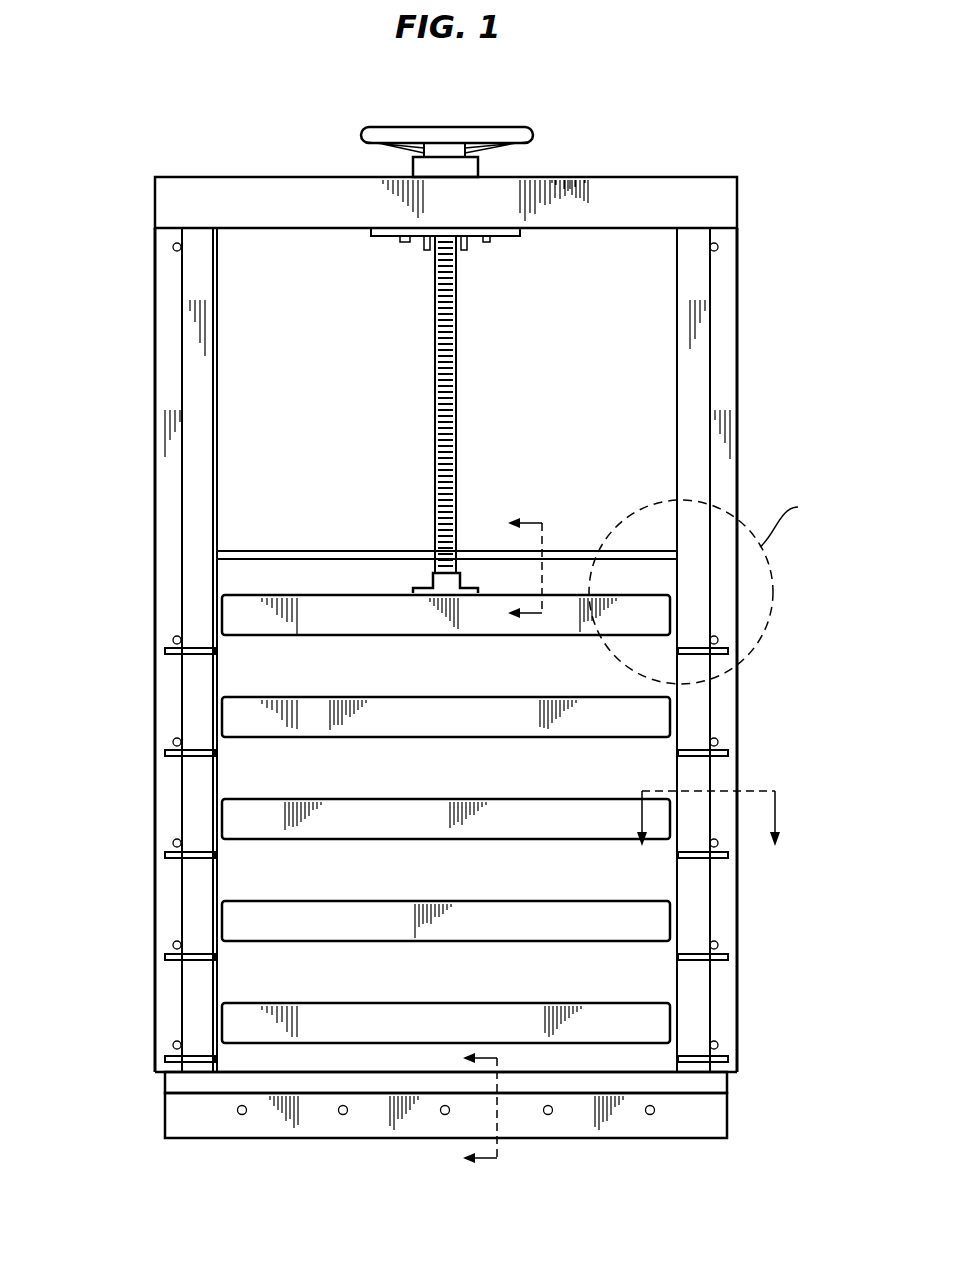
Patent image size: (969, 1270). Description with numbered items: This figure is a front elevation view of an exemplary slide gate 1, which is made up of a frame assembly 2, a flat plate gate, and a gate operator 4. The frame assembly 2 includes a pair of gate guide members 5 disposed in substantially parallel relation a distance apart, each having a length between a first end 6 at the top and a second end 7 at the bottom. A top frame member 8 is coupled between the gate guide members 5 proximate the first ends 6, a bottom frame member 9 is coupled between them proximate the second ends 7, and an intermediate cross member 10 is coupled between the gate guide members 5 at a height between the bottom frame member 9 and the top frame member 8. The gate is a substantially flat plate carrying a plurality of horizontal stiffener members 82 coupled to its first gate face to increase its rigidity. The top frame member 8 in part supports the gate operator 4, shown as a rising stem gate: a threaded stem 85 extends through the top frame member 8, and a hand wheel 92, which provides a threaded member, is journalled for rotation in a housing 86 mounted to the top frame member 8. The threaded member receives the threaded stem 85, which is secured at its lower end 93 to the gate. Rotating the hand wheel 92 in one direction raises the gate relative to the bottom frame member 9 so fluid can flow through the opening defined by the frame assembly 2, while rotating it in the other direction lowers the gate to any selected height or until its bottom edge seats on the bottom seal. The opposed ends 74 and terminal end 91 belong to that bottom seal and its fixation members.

The slide gate 1 is at (649, 88).
The frame assembly 2 is at (740, 229).
The gate operator 4 is at (484, 129).
The gate guide members 5 is at (204, 421).
The first end 6 is at (196, 238).
The second end 7 is at (195, 1062).
The top frame member 8 is at (331, 197).
The bottom frame member 9 is at (672, 1083).
The intermediate cross member 10 is at (315, 551).
The opposed ends 74 is at (165, 1093).
The horizontal stiffener members 82 is at (238, 612).
The threaded stem 85 is at (456, 320).
The housing 86 is at (478, 163).
The terminal end 91 is at (717, 1110).
The hand wheel 92 is at (533, 136).
The lower end 93 is at (433, 570).